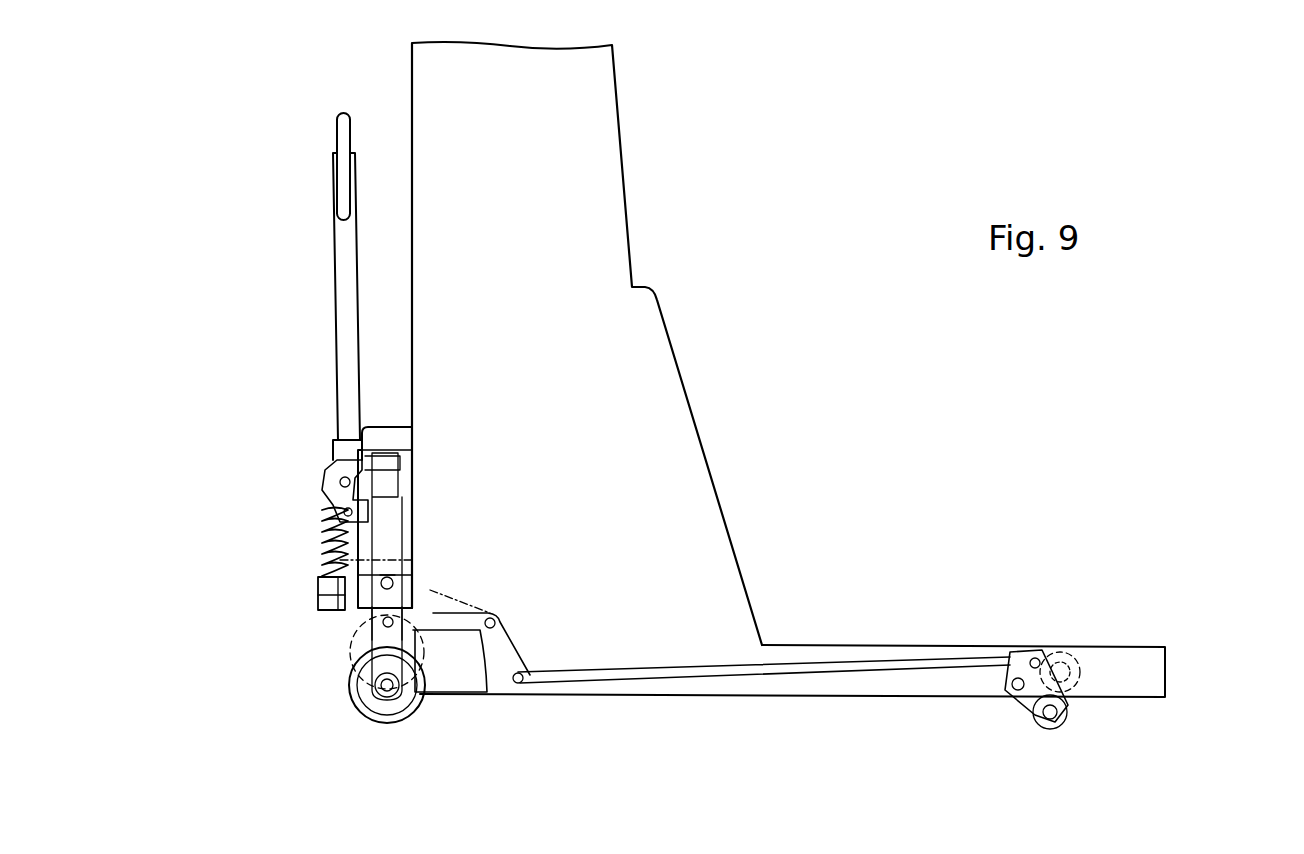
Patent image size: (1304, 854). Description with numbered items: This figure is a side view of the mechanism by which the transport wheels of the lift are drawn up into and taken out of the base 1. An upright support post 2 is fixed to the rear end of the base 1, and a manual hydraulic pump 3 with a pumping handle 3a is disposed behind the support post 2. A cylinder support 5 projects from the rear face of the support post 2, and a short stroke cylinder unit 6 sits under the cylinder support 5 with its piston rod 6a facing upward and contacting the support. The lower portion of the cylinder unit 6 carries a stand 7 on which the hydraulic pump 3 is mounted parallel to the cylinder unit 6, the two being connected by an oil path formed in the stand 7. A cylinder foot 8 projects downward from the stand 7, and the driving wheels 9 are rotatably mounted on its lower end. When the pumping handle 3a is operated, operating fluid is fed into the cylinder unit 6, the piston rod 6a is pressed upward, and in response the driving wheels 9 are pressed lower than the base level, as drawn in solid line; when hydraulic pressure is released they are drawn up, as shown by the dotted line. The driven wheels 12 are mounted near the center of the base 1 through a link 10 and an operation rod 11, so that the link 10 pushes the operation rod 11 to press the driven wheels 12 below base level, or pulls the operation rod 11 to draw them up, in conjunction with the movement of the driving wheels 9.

The base 1 is at (1153, 673).
The support post 2 is at (583, 138).
The manual hydraulic pump 3 is at (320, 555).
The pumping handle 3a is at (340, 295).
The cylinder support 5 is at (385, 432).
The cylinder unit 6 is at (397, 553).
The piston rod 6a is at (327, 470).
The stand 7 is at (317, 598).
The cylinder foot 8 is at (342, 657).
The driving wheels 9 is at (390, 715).
The link 10 is at (487, 692).
The operation rod 11 is at (800, 672).
The driven wheels 12 is at (1070, 718).